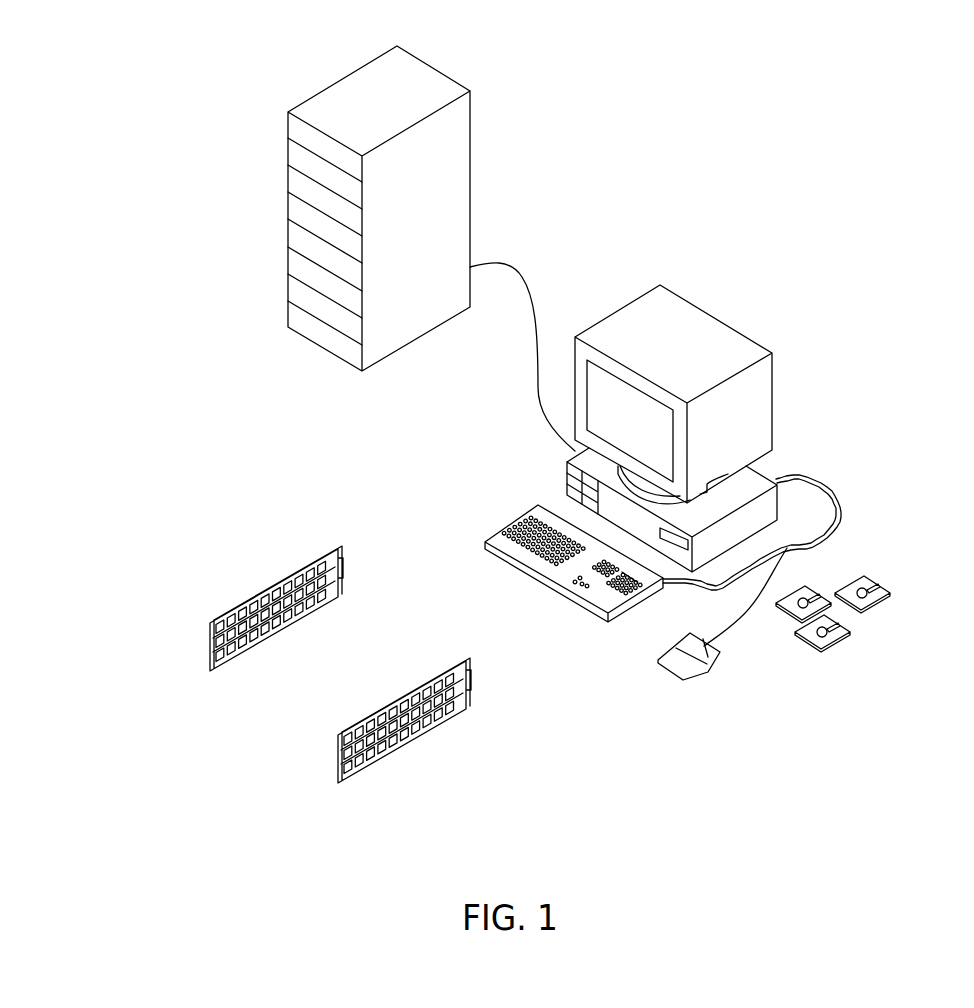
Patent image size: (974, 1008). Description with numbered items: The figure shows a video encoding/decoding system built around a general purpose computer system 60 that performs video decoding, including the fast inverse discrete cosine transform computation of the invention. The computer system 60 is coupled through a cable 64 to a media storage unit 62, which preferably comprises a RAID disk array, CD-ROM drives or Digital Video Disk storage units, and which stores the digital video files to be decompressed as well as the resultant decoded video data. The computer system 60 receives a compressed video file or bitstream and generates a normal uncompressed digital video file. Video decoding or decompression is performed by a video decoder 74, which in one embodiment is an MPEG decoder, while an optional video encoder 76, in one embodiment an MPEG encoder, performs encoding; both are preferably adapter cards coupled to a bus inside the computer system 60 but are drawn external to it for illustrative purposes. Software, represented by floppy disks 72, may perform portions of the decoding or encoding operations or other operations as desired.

The computer system 60 is at (670, 305).
The media storage unit 62 is at (288, 190).
The cable 64 is at (521, 275).
The floppy disks 72 is at (868, 587).
The video decoder 74 is at (208, 657).
The video encoder 76 is at (337, 768).